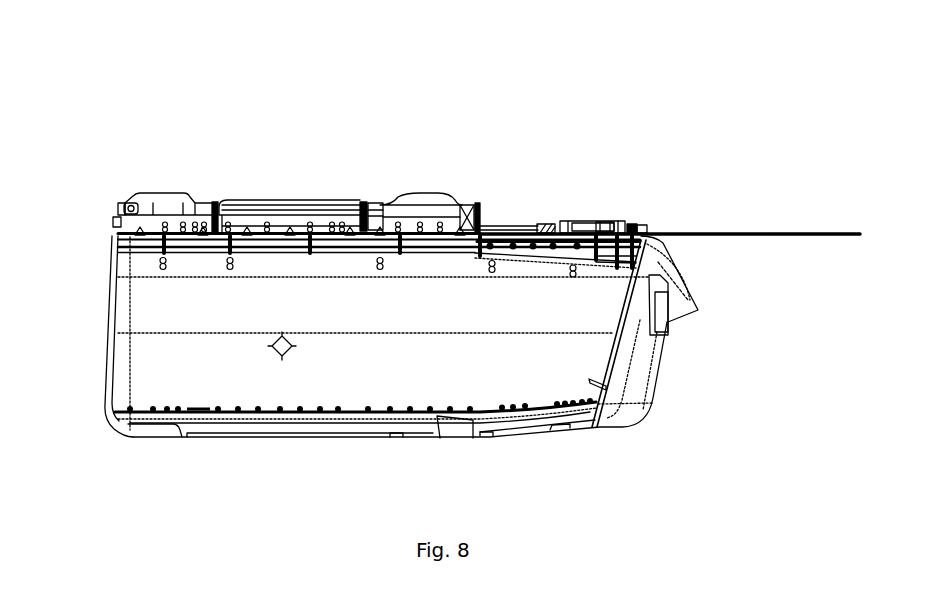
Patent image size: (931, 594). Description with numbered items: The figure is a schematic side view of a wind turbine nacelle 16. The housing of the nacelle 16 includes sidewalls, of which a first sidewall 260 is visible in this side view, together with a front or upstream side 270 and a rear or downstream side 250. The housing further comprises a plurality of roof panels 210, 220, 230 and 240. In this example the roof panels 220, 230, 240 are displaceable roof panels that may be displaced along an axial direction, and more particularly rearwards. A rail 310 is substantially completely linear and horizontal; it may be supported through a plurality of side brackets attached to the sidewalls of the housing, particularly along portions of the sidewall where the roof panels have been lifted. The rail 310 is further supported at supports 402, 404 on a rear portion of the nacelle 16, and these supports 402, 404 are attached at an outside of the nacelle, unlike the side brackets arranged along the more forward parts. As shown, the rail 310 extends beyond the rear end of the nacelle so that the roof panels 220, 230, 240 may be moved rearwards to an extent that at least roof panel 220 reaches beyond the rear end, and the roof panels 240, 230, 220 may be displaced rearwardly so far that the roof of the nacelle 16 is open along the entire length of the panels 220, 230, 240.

The nacelle 16 is at (288, 84).
The roof panel 210 is at (590, 217).
The roof panel 220 is at (533, 220).
The roof panel 230 is at (295, 200).
The roof panel 240 is at (178, 197).
The rear or downstream side 250 is at (687, 289).
The first sidewall 260 is at (459, 384).
The front or upstream side 270 is at (110, 337).
The rail 310 is at (121, 202).
The support 402 is at (645, 223).
The support 404 is at (600, 217).